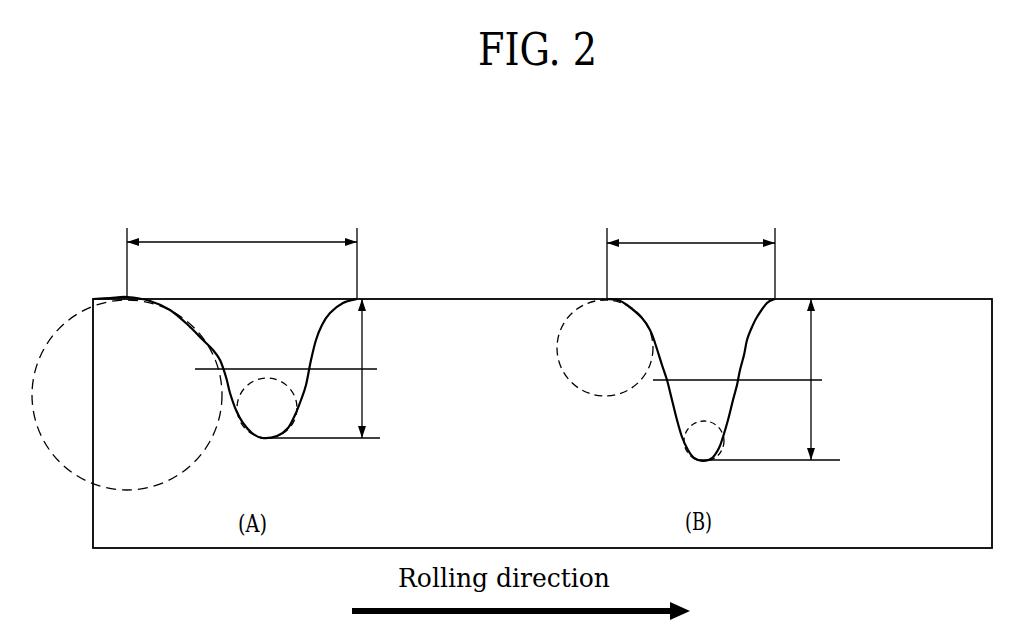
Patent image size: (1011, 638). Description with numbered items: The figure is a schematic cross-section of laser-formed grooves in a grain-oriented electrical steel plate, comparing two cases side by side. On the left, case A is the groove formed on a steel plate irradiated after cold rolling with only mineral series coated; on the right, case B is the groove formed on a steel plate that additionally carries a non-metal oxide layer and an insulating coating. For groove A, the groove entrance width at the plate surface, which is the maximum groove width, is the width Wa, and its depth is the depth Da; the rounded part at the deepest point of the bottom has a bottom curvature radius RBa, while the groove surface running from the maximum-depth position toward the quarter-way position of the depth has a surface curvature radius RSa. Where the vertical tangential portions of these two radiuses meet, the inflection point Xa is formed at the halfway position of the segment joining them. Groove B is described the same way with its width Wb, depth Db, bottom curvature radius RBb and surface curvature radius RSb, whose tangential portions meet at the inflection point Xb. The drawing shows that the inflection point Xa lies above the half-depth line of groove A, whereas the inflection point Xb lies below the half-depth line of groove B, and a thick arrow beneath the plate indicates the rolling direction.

The width of the groove Wa is at (242, 257).
The depth of the groove Da is at (317, 368).
The inflection point Xa is at (222, 357).
The curvature radius of the surface part RSa is at (171, 307).
The bottom curvature radius RBa is at (249, 427).
The width of the groove Wb is at (691, 257).
The depth of the groove Db is at (769, 379).
The inflection point Xb is at (669, 397).
The curvature radius of the surface part RSb is at (641, 318).
The bottom curvature radius RBb is at (695, 453).